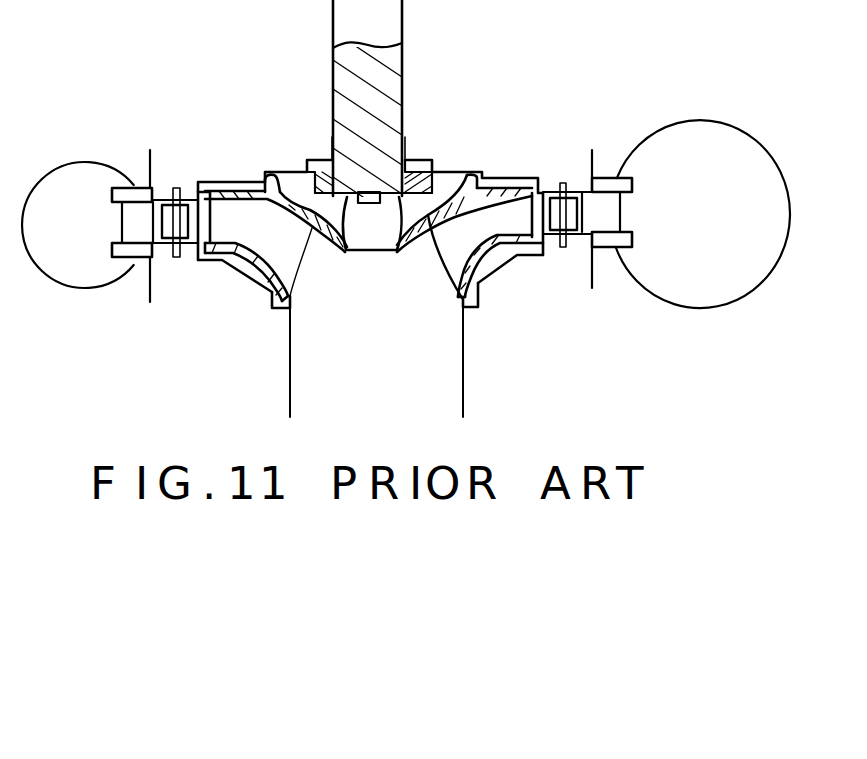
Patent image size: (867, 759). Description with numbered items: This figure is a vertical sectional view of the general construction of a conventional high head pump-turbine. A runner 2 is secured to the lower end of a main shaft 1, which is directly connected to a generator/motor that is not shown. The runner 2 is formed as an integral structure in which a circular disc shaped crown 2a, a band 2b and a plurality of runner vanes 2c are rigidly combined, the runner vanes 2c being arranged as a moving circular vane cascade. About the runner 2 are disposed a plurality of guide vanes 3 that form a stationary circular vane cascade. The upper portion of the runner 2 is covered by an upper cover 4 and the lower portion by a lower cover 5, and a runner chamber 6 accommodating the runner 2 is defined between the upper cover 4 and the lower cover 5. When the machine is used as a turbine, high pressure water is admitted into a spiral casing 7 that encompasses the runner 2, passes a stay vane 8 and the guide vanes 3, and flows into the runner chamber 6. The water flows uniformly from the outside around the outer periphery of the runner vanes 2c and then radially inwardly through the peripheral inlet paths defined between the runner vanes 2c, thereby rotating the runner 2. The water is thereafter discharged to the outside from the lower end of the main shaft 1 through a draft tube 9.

The main shaft 1 is at (398, 99).
The runner 2 is at (532, 181).
The crown 2a is at (497, 174).
The band 2b is at (500, 252).
The runner vanes 2c is at (450, 253).
The guide vanes 3 is at (575, 181).
The upper cover 4 is at (449, 166).
The lower cover 5 is at (487, 287).
The runner chamber 6 is at (523, 256).
The spiral casing 7 is at (695, 119).
The stay vane 8 is at (607, 216).
The draft tube 9 is at (288, 378).